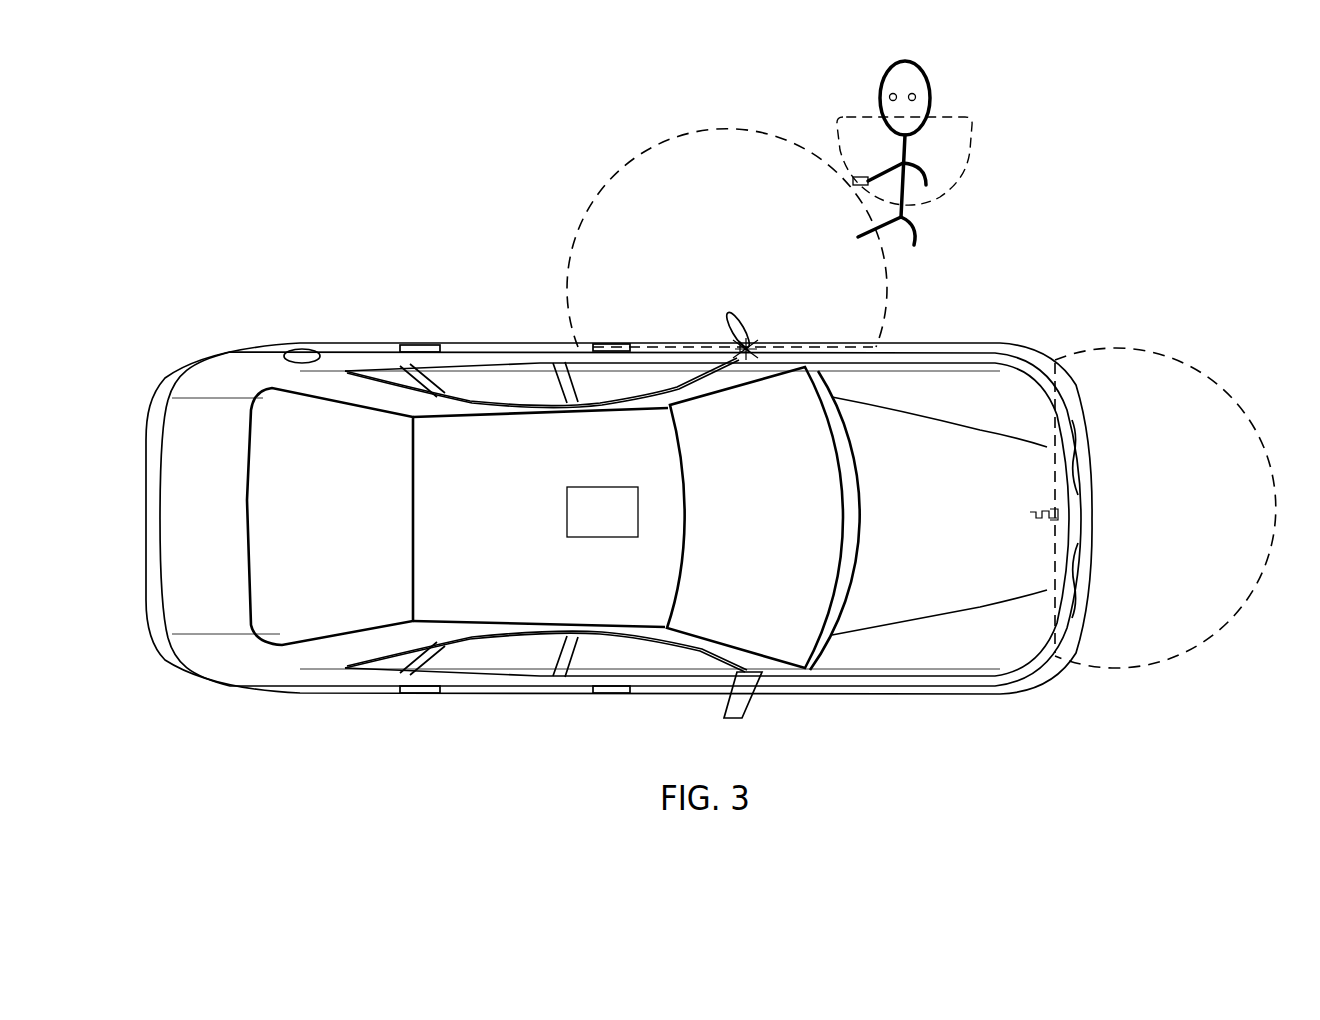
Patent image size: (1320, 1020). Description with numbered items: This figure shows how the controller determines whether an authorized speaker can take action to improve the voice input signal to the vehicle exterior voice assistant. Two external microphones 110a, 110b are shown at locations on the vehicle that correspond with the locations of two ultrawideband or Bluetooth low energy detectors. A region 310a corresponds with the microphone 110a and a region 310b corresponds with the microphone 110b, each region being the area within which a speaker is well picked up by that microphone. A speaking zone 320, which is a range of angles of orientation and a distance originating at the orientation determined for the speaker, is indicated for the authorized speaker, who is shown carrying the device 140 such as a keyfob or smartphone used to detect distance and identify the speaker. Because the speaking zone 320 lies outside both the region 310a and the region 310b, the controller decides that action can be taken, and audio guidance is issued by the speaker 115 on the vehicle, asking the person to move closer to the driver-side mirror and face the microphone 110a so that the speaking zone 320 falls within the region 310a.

The speaker 115 is at (625, 525).
The microphone 110a is at (753, 347).
The microphone 110b is at (1067, 517).
The region 310a is at (587, 210).
The region 310b is at (1190, 360).
The speaking zone 320 is at (974, 148).
The device 140 is at (855, 177).